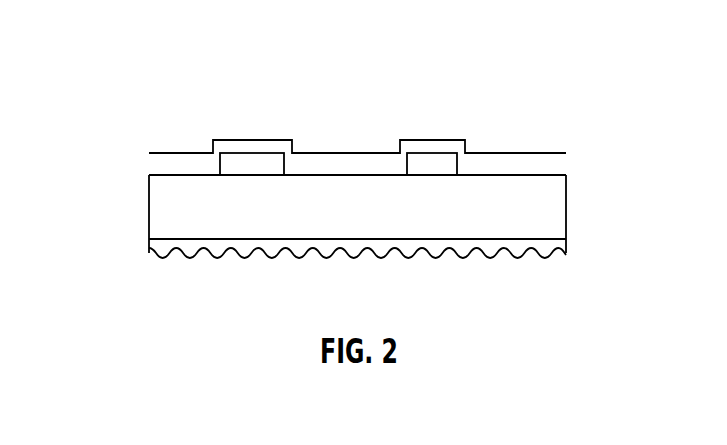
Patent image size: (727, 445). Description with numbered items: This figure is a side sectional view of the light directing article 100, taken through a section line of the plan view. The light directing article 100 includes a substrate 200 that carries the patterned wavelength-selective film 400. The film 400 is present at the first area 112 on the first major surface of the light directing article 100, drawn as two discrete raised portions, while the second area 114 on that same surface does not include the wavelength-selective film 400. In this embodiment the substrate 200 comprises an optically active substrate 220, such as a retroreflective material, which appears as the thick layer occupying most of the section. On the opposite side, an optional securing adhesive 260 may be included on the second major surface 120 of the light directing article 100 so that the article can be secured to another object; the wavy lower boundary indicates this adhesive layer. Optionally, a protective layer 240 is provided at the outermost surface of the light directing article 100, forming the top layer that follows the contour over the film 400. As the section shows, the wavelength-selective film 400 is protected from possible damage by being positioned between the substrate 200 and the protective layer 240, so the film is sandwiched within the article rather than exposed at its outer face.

The light directing article 100 is at (116, 64).
The first area 112 is at (278, 129).
The second area 114 is at (537, 145).
The second major surface 120 is at (203, 269).
The substrate 200 is at (578, 188).
The optically active substrate 220 is at (555, 212).
The protective layer 240 is at (192, 153).
The securing adhesive 260 is at (528, 253).
The wavelength-selective film 400 is at (263, 160).